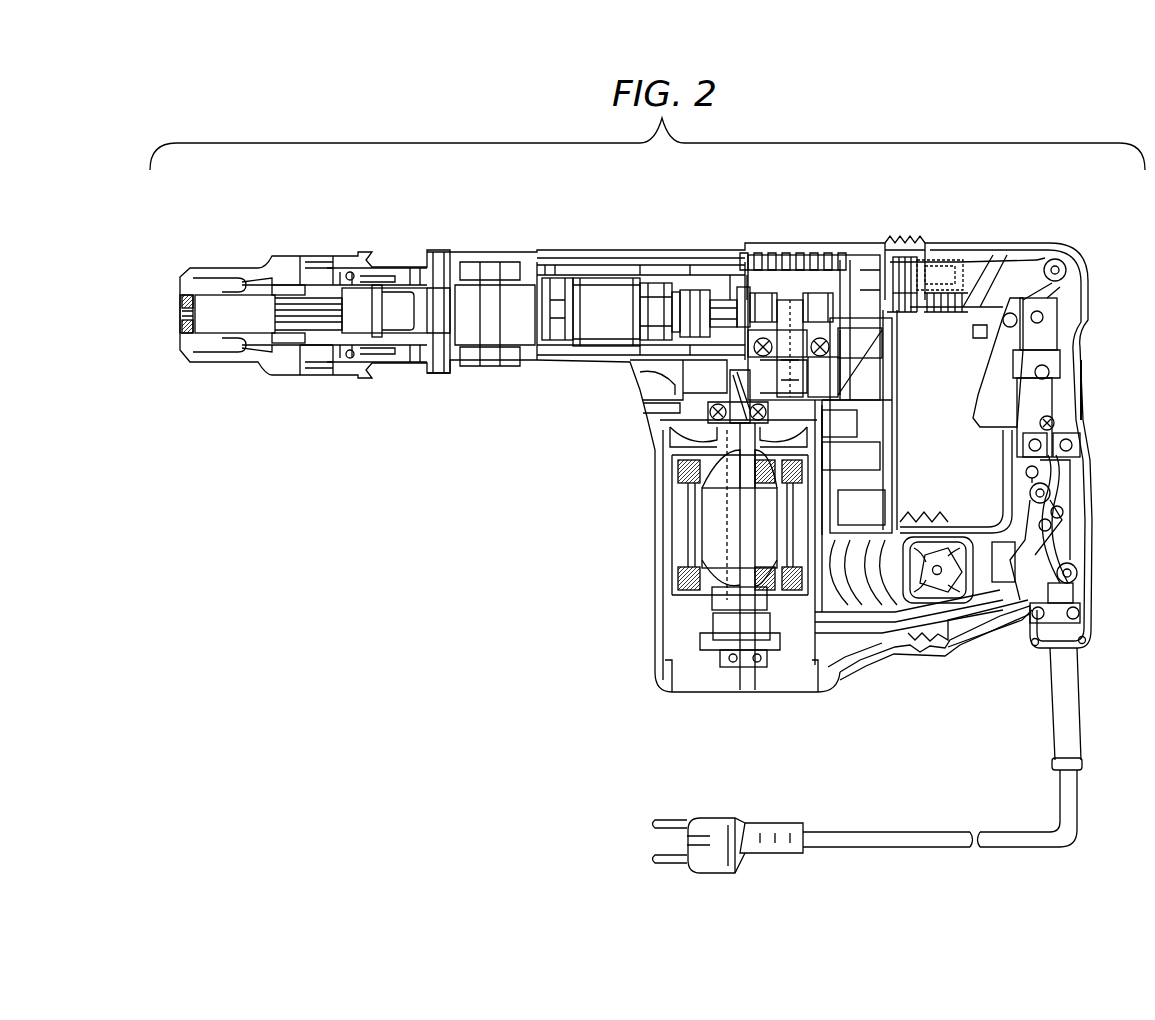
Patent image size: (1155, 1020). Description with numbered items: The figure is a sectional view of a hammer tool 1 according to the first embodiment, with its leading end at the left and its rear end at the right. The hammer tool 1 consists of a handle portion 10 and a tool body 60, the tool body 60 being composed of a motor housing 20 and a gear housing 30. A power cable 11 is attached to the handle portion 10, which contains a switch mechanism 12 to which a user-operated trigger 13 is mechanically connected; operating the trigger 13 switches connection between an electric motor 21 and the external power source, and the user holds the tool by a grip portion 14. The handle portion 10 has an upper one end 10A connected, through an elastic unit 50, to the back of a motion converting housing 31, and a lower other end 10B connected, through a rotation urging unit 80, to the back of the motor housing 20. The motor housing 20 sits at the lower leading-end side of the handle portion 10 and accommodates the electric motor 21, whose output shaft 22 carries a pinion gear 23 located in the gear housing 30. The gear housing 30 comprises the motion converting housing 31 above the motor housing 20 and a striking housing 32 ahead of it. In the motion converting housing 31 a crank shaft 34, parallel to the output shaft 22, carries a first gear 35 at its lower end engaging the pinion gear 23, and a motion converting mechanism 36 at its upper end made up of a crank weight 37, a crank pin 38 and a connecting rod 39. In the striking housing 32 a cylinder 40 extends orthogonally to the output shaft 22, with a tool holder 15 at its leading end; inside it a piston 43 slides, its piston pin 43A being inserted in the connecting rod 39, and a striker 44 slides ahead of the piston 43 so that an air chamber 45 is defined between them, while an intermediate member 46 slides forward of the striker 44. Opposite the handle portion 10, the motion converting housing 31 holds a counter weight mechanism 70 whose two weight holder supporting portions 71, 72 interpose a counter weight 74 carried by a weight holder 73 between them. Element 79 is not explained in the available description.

The hammer tool 1 is at (1073, 235).
The handle portion 10 is at (1093, 580).
The one end of the handle portion 10A is at (950, 248).
The other end of the handle portion 10B is at (947, 642).
The power cable 11 is at (1075, 712).
The switch mechanism 12 is at (1067, 420).
The trigger 13 is at (1070, 368).
The grip portion 14 is at (1088, 403).
The tool holder 15 is at (236, 278).
The motor housing 20 is at (667, 657).
The electric motor 21 is at (733, 573).
The output shaft 22 is at (677, 463).
The pinion gear 23 is at (740, 280).
The gear housing 30 is at (630, 225).
The motion converting housing 31 is at (867, 277).
The striking housing 32 is at (484, 260).
The crank shaft 34 is at (807, 330).
The first gear 35 is at (823, 293).
The motion converting mechanism 36 is at (760, 291).
The crank weight 37 is at (790, 300).
The crank pin 38 is at (740, 270).
The connecting rod 39 is at (700, 290).
The cylinder 40 is at (562, 266).
The piston 43 is at (617, 277).
The piston pin 43A is at (667, 307).
The striker 44 is at (563, 313).
The air chamber 45 is at (617, 313).
The intermediate member 46 is at (431, 307).
The elastic unit 50 is at (930, 235).
The tool body 60 is at (597, 462).
The counter weight mechanism 70 is at (890, 400).
The weight holder supporting portion 71 is at (870, 343).
The weight holder supporting portion 72 is at (877, 517).
The weight holder 73 is at (850, 370).
The counter weight 74 is at (873, 450).
The connector 79 is at (867, 433).
The rotation urging unit 80 is at (887, 645).